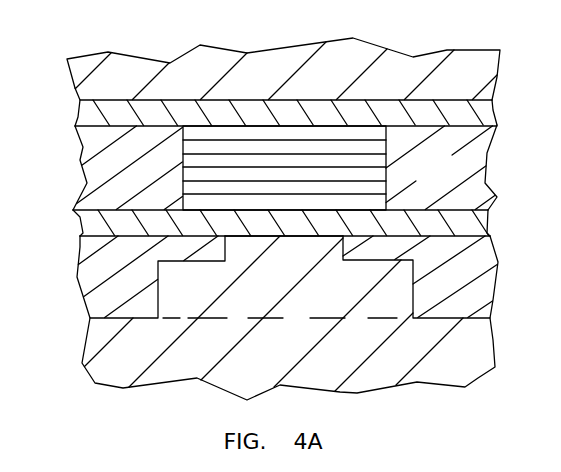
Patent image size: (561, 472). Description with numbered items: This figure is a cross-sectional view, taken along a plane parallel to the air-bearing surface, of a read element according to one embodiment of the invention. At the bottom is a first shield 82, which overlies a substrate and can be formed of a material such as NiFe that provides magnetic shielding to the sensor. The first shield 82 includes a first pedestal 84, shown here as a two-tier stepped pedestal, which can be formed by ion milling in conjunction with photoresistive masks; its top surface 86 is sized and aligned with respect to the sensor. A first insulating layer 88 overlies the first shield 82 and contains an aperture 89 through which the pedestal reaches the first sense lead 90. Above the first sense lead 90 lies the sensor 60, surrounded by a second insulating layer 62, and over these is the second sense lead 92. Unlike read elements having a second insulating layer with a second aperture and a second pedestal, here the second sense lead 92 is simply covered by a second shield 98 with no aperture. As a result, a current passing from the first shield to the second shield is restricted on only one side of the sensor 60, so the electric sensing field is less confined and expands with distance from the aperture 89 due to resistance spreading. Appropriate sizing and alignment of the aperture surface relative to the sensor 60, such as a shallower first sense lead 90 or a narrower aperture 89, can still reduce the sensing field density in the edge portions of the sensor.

The second shield 98 is at (273, 53).
The second sense lead 92 is at (484, 108).
The second insulating layer 62 is at (84, 149).
The sensor 60 is at (372, 162).
The first sense lead 90 is at (86, 218).
The first insulating layer 88 is at (490, 282).
The first shield 82 is at (483, 345).
The first pedestal 84 is at (290, 308).
The top surface 86 is at (301, 238).
The aperture 89 is at (372, 297).